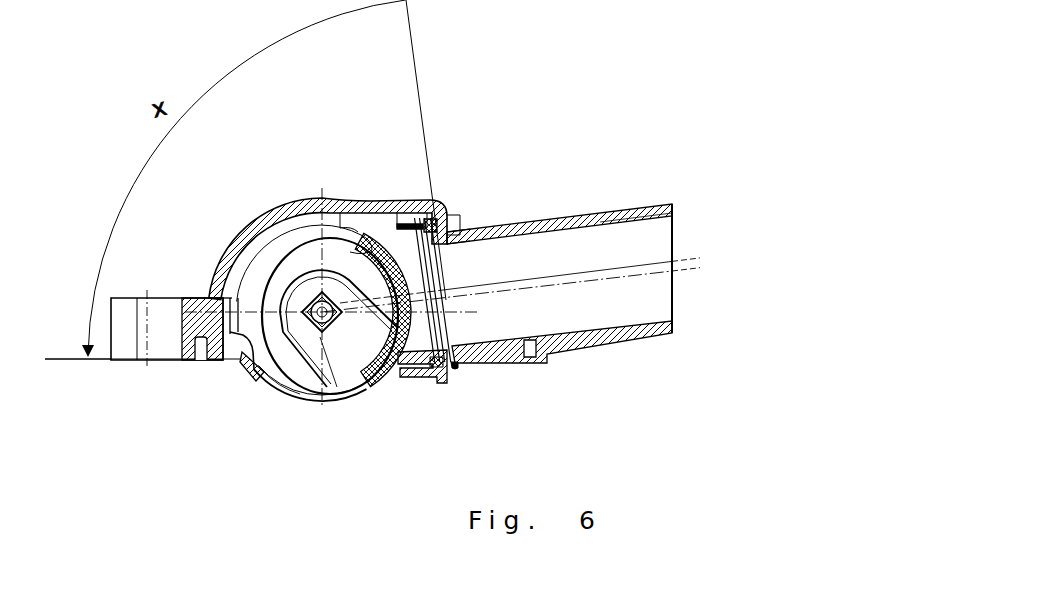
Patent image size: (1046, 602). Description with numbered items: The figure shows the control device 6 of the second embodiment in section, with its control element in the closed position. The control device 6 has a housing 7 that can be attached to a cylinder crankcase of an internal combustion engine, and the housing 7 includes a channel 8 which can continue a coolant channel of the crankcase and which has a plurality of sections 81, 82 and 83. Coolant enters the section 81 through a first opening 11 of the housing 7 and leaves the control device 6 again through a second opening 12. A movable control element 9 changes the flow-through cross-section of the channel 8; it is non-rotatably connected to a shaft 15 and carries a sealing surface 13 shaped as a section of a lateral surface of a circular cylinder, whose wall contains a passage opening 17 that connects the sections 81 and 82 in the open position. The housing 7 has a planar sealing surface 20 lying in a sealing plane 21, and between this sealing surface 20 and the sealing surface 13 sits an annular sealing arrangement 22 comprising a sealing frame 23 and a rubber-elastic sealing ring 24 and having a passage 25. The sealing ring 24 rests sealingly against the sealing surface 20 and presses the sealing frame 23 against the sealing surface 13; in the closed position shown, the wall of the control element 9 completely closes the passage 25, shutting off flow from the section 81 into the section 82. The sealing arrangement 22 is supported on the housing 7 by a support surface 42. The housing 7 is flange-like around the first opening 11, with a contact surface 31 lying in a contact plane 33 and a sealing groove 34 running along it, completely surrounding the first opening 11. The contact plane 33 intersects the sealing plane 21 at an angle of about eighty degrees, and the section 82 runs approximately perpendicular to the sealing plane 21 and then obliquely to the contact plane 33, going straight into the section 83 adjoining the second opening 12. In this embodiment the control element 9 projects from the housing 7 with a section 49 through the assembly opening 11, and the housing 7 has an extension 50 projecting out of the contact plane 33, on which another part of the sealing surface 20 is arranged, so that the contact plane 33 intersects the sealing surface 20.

The control device 6 is at (580, 92).
The housing 7 is at (343, 201).
The channel 8 is at (256, 245).
The control element 9 is at (254, 378).
The first opening 11 is at (222, 368).
The second opening 12 is at (690, 231).
The sealing surface 13 is at (378, 392).
The shaft 15 is at (313, 298).
The passage opening 17 is at (288, 408).
The sealing surface 20 is at (447, 370).
The sealing plane 21 is at (401, 3).
The sealing arrangement 22 is at (418, 390).
The sealing frame 23 is at (408, 224).
The sealing ring 24 is at (452, 229).
The passage 25 is at (446, 326).
The contact surface 31 is at (512, 365).
The contact plane 33 is at (78, 352).
The sealing groove 34 is at (535, 360).
The support surface 42 is at (428, 218).
The section 49 is at (238, 378).
The extension 50 is at (462, 372).
The section 81 is at (212, 293).
The section 82 is at (456, 246).
The section 83 is at (658, 226).